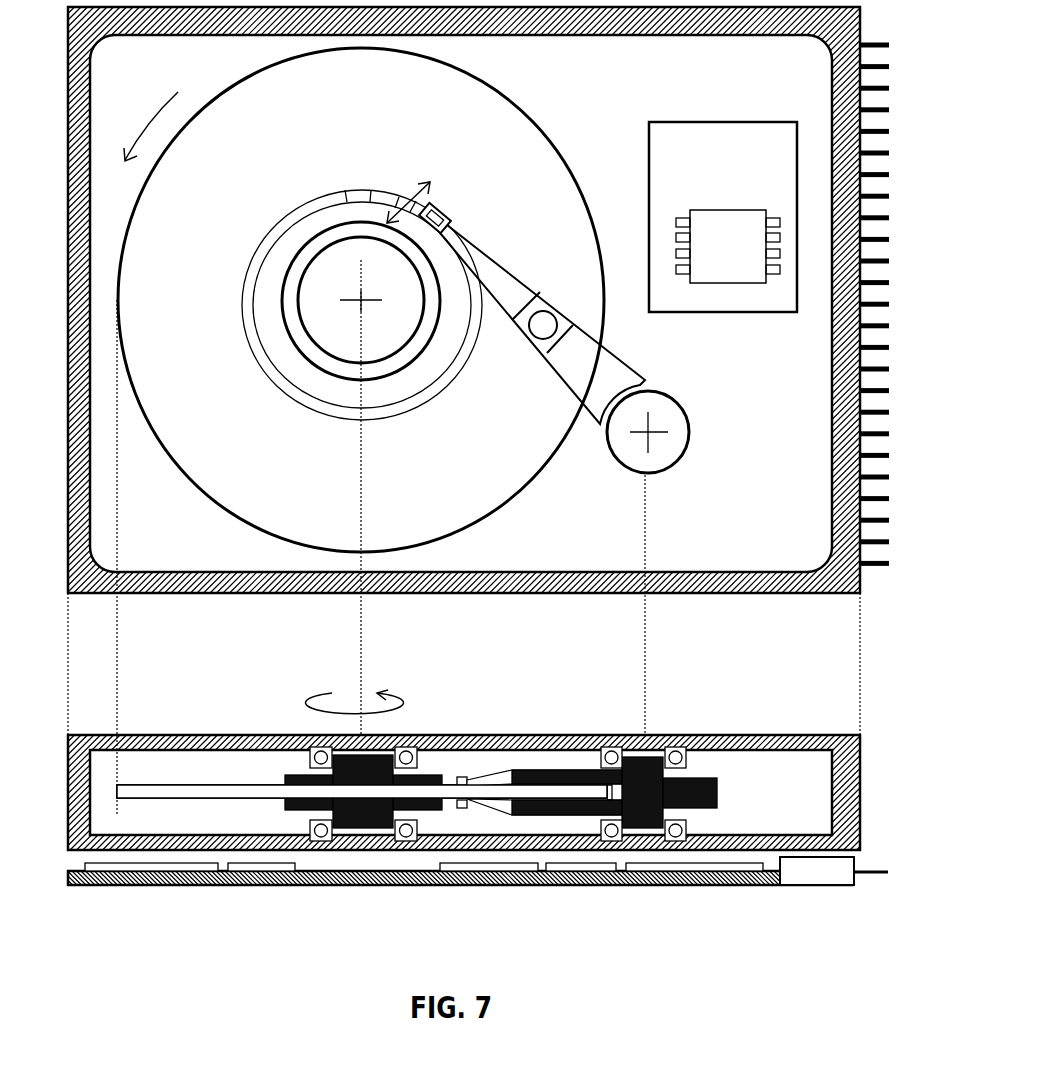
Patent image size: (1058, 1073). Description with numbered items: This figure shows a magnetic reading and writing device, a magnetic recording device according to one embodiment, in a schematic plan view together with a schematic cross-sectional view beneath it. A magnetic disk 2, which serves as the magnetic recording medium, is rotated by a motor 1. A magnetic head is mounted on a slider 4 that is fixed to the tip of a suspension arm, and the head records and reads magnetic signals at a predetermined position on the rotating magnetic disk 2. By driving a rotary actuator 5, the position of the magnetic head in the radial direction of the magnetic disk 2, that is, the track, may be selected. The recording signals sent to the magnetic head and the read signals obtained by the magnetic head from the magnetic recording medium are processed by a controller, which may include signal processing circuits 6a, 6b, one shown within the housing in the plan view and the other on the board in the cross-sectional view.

The motor 1 is at (232, 785).
The magnetic disk 2 is at (153, 790).
The slider 4 is at (440, 208).
The rotary actuator 5 is at (678, 428).
The signal processing circuit 6a is at (723, 217).
The signal processing circuit 6b is at (685, 876).